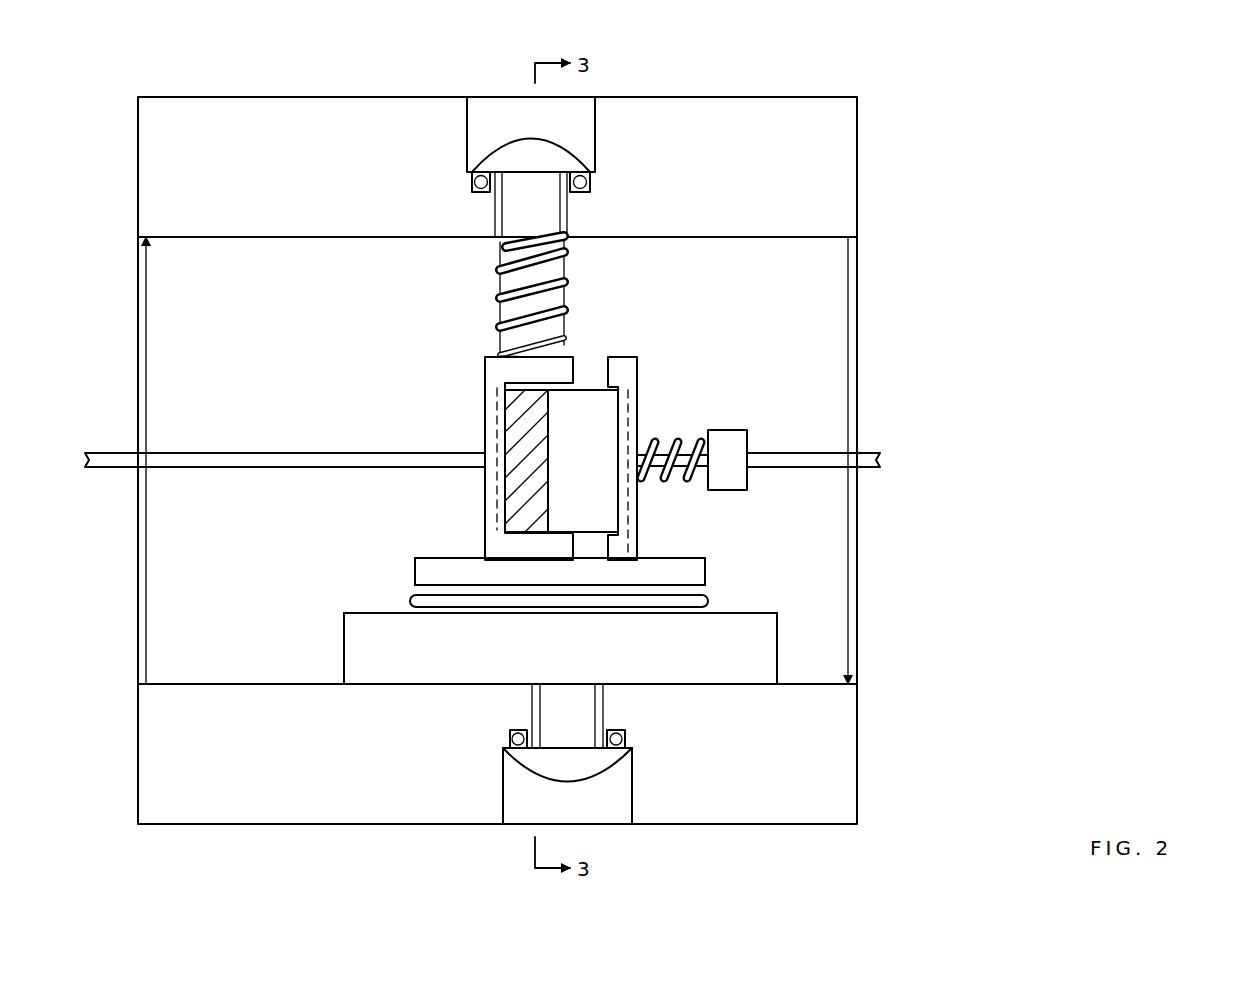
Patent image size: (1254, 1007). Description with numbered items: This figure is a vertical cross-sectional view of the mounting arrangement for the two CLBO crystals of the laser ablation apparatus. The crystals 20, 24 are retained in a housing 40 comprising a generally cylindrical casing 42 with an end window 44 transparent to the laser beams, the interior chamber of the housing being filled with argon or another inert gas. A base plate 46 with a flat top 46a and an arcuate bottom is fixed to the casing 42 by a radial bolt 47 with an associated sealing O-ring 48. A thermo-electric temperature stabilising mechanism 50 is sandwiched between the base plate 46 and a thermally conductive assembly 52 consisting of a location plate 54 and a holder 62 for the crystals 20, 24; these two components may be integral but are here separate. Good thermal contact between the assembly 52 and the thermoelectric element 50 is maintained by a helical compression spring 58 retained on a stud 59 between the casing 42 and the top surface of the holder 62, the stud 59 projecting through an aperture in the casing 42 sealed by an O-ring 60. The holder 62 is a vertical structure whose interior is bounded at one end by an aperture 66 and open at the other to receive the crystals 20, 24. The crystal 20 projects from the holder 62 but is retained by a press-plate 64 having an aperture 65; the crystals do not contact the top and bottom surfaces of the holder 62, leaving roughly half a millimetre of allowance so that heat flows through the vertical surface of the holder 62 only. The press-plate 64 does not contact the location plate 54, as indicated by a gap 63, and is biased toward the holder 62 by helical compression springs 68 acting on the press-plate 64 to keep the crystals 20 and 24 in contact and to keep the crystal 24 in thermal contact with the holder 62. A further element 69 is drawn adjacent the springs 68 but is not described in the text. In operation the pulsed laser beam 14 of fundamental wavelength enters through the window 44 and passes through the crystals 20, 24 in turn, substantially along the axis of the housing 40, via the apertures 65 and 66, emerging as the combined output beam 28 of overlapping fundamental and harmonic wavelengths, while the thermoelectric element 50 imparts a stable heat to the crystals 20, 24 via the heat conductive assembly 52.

The pulsed laser beam 14 is at (872, 455).
The CLBO crystal 20 is at (577, 400).
The CLBO crystal 24 is at (512, 406).
The combined output beam 28 is at (107, 453).
The housing 40 is at (256, 95).
The casing 42 is at (790, 108).
The end window 44 is at (858, 365).
The base plate 46 is at (760, 647).
The flat top 46a is at (750, 613).
The radial bolt 47 is at (537, 758).
The sealing O-ring 48 is at (625, 738).
The thermo-electric temperature stabilising mechanism 50 is at (412, 600).
The thermally conductive assembly 52 is at (483, 548).
The location plate 54 is at (707, 572).
The helical compression spring 58 is at (497, 300).
The stud 59 is at (560, 140).
The O-ring 60 is at (470, 183).
The holder 62 is at (490, 408).
The gap 63 is at (640, 560).
The press-plate 64 is at (633, 367).
The aperture 65 is at (637, 412).
The aperture 66 is at (497, 467).
The helical compression springs 68 is at (690, 478).
The stop block 69 is at (742, 430).